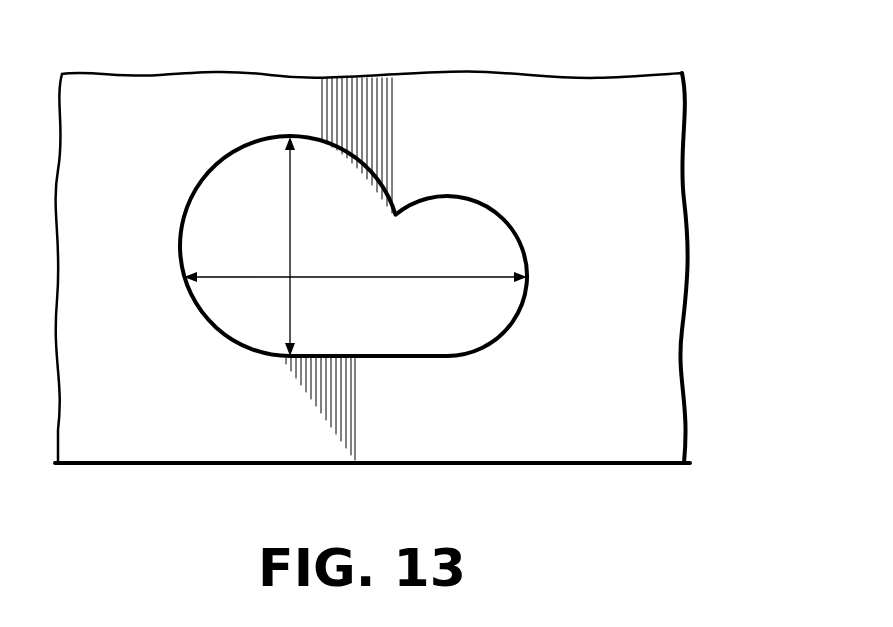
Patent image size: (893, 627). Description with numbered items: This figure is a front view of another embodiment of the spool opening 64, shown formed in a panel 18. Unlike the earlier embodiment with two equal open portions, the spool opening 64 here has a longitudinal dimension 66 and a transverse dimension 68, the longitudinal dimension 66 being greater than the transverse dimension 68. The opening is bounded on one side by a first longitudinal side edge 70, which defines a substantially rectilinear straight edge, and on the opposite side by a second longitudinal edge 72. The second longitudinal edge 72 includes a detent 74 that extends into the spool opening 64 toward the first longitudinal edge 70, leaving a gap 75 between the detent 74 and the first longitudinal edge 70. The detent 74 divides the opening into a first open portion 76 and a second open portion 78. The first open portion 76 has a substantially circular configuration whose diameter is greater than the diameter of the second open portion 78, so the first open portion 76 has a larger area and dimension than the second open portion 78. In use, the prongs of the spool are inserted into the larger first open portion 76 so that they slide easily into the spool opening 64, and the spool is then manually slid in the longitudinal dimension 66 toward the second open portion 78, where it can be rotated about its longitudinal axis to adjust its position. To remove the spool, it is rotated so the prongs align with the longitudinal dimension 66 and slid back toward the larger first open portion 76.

The panel 18 is at (297, 464).
The spool opening 64 is at (482, 358).
The longitudinal dimension 66 is at (463, 280).
The transverse dimension 68 is at (300, 172).
The first longitudinal side edge 70 is at (380, 355).
The second longitudinal edge 72 is at (263, 146).
The detent 74 is at (396, 214).
The gap 75 is at (400, 255).
The first open portion 76 is at (200, 198).
The second open portion 78 is at (508, 322).